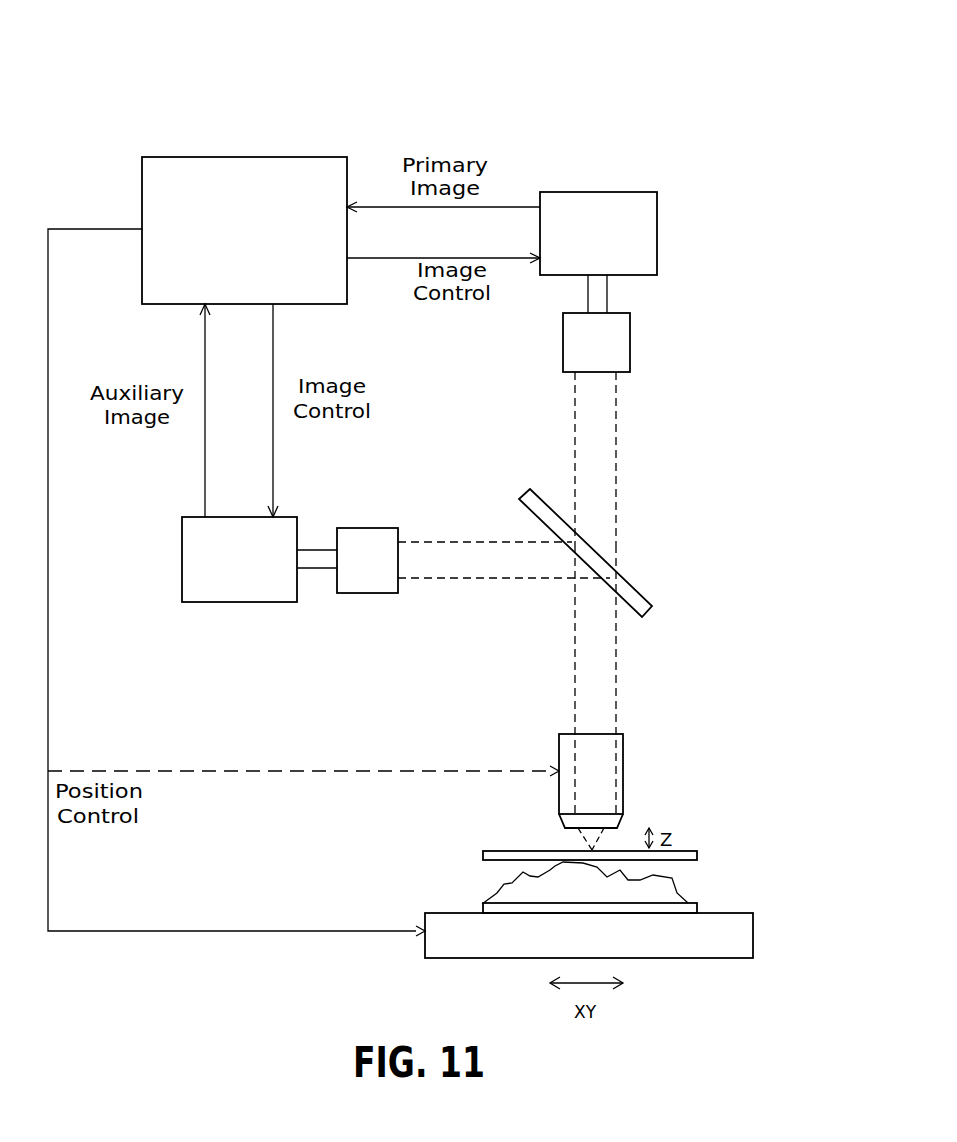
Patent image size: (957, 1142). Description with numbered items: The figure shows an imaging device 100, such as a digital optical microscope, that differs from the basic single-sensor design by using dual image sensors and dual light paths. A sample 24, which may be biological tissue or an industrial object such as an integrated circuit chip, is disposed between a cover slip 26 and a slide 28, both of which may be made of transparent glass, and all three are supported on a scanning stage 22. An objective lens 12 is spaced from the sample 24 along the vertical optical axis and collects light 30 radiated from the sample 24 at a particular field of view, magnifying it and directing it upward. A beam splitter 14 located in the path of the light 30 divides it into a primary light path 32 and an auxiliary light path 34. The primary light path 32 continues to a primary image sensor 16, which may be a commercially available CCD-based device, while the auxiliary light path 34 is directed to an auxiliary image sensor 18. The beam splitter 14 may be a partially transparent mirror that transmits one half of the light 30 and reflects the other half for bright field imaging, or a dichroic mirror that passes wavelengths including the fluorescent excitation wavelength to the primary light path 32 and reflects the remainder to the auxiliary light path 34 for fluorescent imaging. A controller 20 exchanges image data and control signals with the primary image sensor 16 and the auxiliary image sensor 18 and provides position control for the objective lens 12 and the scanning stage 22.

The imaging device 100 is at (193, 120).
The controller 20 is at (142, 185).
The primary image sensor 16 is at (657, 230).
The primary light path 32 is at (617, 423).
The light 30 is at (616, 680).
The beam splitter 14 is at (637, 585).
The auxiliary light path 34 is at (455, 543).
The auxiliary image sensor 18 is at (237, 602).
The objective lens 12 is at (623, 760).
The cover slip 26 is at (483, 855).
The sample 24 is at (680, 890).
The slide 28 is at (482, 905).
The scanning stage 22 is at (753, 935).